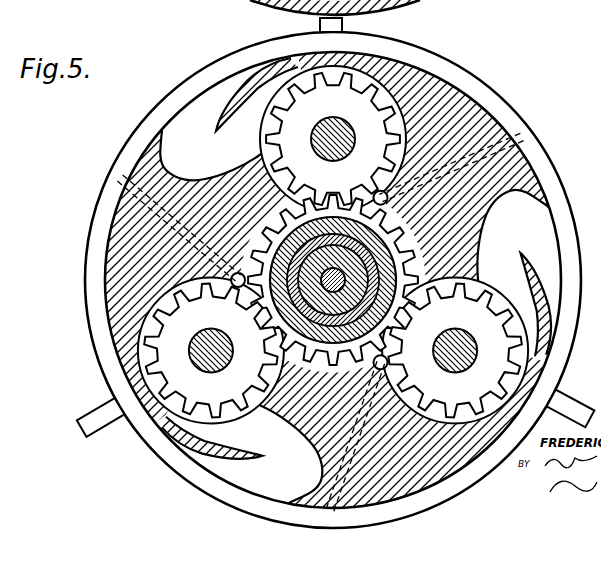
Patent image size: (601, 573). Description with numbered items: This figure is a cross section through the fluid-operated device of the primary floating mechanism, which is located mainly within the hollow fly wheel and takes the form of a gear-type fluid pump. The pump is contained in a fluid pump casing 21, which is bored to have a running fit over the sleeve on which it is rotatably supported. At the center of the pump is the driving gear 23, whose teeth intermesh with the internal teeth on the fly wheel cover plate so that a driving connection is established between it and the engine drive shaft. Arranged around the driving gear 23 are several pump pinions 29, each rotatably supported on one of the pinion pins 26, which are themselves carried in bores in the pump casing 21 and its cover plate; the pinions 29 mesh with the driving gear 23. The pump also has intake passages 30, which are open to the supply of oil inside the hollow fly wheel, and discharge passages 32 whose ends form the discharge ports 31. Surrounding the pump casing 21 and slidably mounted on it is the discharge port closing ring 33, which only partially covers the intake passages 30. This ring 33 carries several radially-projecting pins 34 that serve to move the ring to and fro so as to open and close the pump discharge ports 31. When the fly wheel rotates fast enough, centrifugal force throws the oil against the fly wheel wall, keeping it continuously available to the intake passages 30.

The fluid pump casing 21 is at (470, 102).
The driving gear 23 is at (392, 324).
The pinion pins 26 is at (338, 110).
The pump pinions 29 is at (263, 133).
The intake passages 30 is at (537, 220).
The discharge ports 31 is at (116, 178).
The discharge passages 32 is at (377, 192).
The discharge port closing ring 33 is at (140, 136).
The radially-projecting pins 34 is at (343, 23).